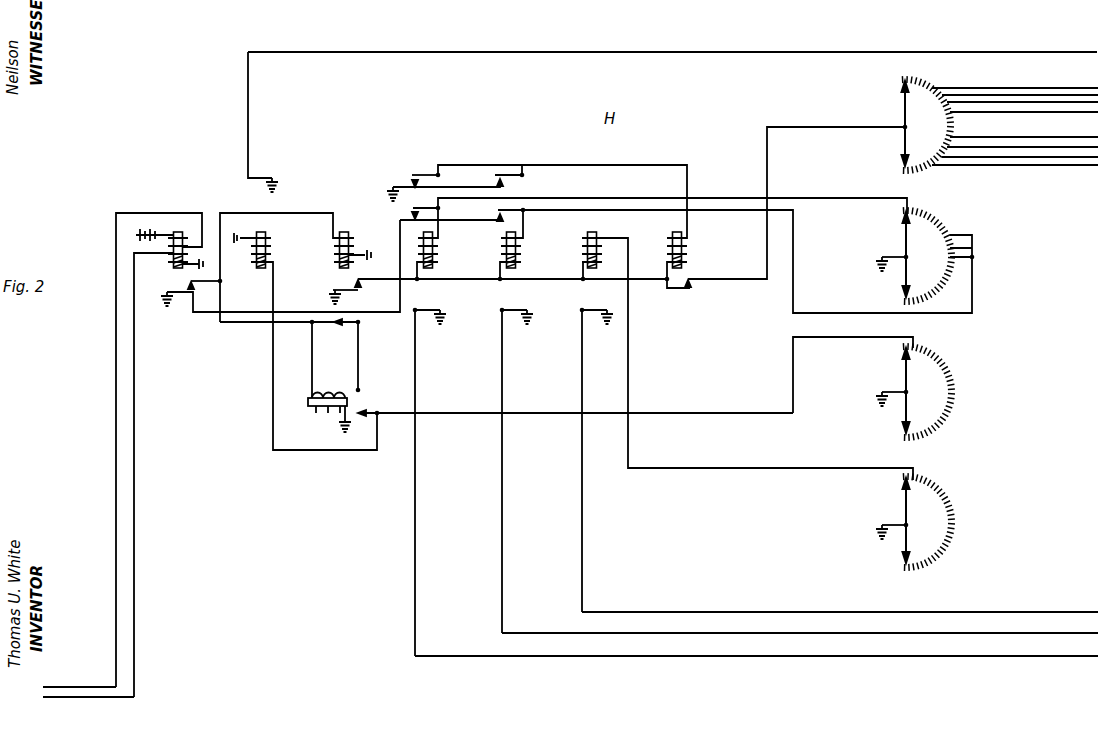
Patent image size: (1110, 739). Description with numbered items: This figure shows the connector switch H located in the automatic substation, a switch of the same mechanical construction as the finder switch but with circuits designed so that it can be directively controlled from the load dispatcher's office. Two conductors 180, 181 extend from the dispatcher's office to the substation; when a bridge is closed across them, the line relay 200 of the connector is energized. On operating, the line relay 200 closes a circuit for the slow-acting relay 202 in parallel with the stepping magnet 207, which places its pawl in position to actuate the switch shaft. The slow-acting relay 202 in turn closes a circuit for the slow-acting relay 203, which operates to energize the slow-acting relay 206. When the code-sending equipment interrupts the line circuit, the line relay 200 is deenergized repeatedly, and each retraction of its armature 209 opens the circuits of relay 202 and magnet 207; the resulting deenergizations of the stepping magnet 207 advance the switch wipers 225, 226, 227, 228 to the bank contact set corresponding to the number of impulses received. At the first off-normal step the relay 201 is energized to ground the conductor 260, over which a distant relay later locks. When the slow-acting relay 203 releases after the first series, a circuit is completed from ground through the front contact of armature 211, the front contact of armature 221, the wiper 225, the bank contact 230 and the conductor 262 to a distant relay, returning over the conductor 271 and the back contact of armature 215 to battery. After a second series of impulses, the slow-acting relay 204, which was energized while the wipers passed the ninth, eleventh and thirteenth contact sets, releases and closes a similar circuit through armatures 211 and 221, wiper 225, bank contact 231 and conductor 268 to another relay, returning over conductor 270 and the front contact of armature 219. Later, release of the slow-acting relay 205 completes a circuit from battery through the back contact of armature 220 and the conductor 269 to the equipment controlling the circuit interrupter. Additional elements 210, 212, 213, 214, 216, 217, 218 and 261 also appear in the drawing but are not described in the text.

The conductor 180 is at (100, 687).
The conductor 181 is at (100, 697).
The line relay 200 is at (173, 263).
The relay 201 is at (257, 250).
The slow-acting relay 202 is at (340, 253).
The slow-acting relay 203 is at (433, 255).
The slow-acting relay 204 is at (515, 255).
The slow-acting relay 205 is at (597, 257).
The slow-acting relay 206 is at (682, 257).
The stepping magnet 207 is at (329, 379).
The armature 209 is at (185, 291).
The switch 210 is at (258, 178).
The armature 211 is at (338, 290).
The switch 212 is at (347, 325).
The switch 213 is at (427, 174).
The switch 214 is at (422, 215).
The armature 215 is at (441, 309).
The switch 216 is at (361, 408).
The switch 217 is at (508, 174).
The switch 218 is at (512, 209).
The armature 219 is at (528, 309).
The armature 220 is at (610, 300).
The armature 221 is at (668, 290).
The switch wiper 225 is at (904, 118).
The switch wiper 226 is at (905, 250).
The switch wiper 227 is at (906, 376).
The switch wiper 228 is at (906, 516).
The bank contact 230 is at (945, 90).
The bank contact 231 is at (940, 165).
The conductor 260 is at (1083, 52).
The conductor 261 is at (1003, 90).
The conductor 262 is at (1070, 96).
The conductor 268 is at (1053, 165).
The conductor 269 is at (1072, 612).
The conductor 270 is at (1073, 633).
The conductor 271 is at (1080, 656).